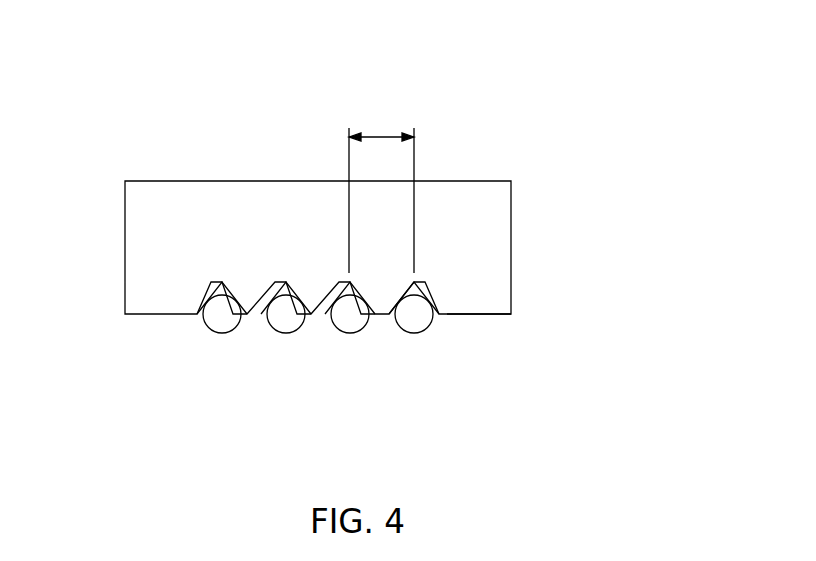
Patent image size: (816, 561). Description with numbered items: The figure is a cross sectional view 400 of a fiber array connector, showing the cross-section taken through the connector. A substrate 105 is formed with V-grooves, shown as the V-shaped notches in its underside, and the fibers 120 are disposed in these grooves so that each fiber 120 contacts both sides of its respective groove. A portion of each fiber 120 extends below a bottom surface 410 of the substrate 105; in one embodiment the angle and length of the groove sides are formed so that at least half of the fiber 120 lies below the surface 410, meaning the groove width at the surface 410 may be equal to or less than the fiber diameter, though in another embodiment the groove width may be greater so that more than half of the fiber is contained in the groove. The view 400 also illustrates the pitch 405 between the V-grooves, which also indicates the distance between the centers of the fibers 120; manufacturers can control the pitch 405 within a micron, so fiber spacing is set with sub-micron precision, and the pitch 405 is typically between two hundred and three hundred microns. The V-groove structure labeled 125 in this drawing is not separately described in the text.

The cross sectional view 400 is at (579, 90).
The substrate 105 is at (511, 246).
The V-groove 125 is at (215, 287).
The fibers 120 is at (413, 325).
The pitch 405 is at (381, 136).
The bottom surface 410 is at (477, 314).